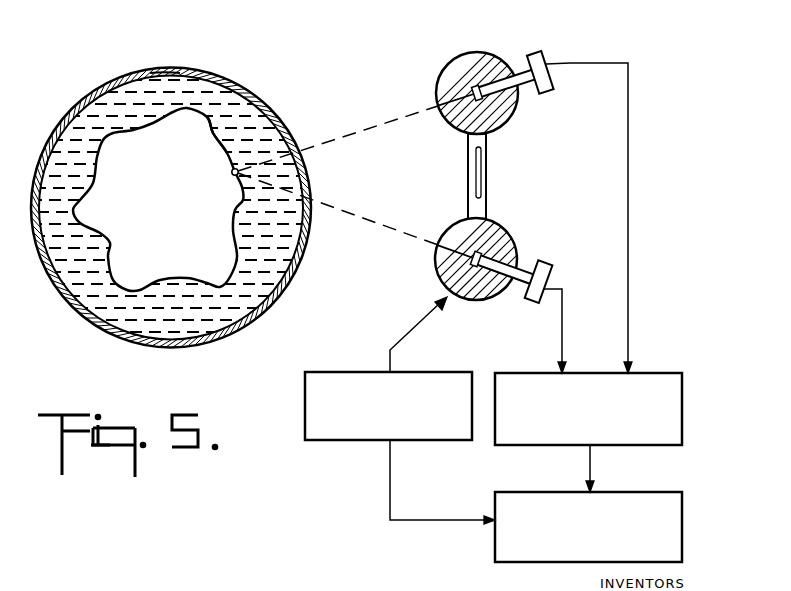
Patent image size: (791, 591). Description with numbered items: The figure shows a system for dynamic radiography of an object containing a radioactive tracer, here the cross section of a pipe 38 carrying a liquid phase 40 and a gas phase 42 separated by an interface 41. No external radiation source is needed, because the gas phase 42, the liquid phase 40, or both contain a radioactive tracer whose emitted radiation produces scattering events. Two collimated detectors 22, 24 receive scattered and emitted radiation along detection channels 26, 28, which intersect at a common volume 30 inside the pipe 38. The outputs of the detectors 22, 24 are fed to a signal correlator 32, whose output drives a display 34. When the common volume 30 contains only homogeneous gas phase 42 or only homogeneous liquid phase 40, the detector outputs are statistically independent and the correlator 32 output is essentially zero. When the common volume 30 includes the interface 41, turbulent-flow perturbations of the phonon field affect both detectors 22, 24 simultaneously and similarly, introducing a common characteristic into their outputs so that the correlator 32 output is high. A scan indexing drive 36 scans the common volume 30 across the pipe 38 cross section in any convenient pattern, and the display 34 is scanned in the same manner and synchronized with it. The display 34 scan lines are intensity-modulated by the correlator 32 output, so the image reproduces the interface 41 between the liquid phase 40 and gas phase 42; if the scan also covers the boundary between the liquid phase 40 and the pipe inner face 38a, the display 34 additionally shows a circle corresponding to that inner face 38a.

The detector 22 is at (455, 52).
The detector 24 is at (500, 223).
The detection channel 26 is at (345, 134).
The detection channel 28 is at (337, 214).
The common volume 30 is at (228, 181).
The signal correlator 32 is at (670, 392).
The display 34 is at (670, 508).
The scan indexing drive 36 is at (353, 372).
The pipe 38 is at (212, 78).
The pipe inner face 38a is at (165, 73).
The liquid phase 40 is at (90, 113).
The interface 41 is at (215, 133).
The gas phase 42 is at (148, 178).